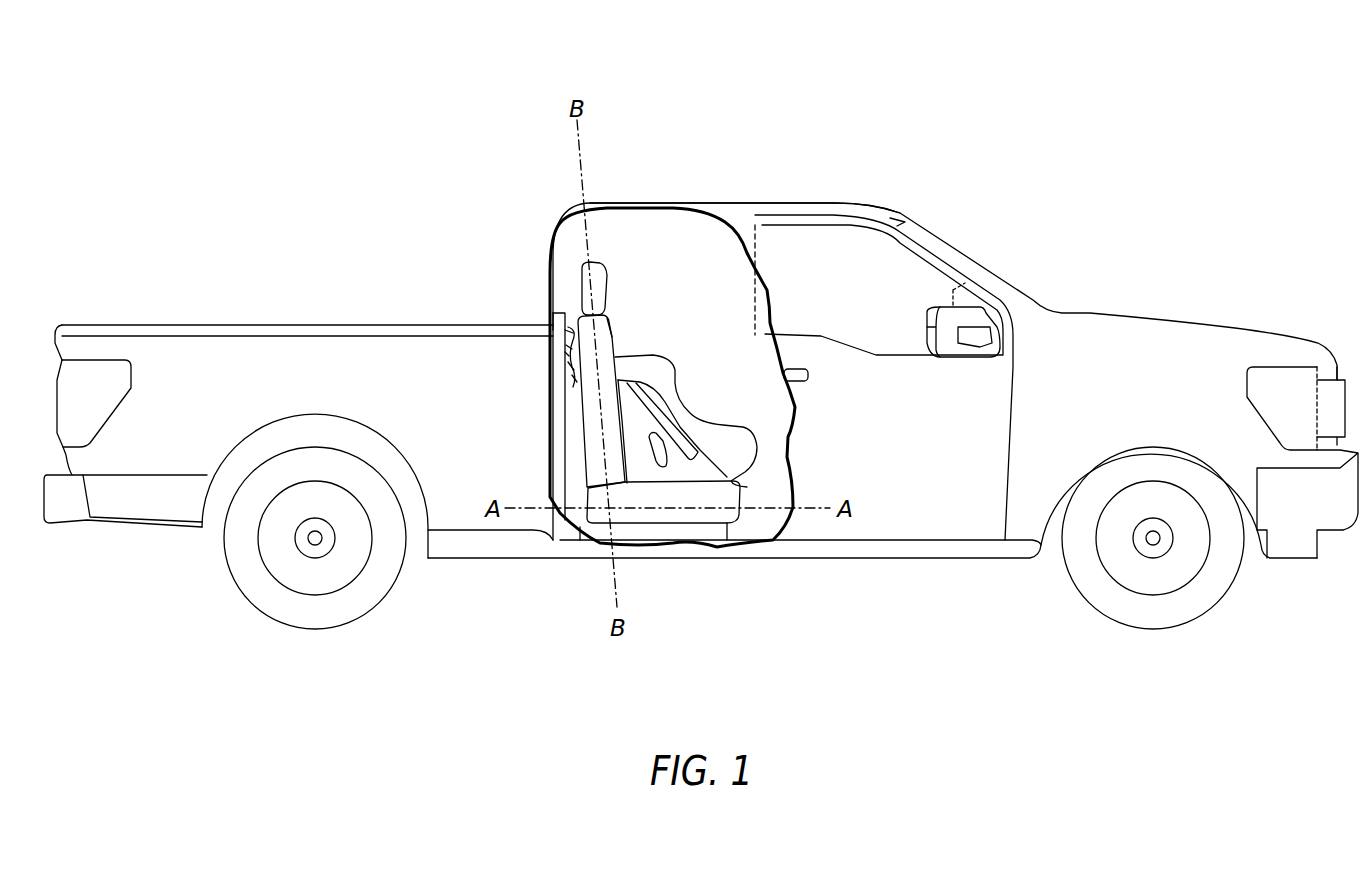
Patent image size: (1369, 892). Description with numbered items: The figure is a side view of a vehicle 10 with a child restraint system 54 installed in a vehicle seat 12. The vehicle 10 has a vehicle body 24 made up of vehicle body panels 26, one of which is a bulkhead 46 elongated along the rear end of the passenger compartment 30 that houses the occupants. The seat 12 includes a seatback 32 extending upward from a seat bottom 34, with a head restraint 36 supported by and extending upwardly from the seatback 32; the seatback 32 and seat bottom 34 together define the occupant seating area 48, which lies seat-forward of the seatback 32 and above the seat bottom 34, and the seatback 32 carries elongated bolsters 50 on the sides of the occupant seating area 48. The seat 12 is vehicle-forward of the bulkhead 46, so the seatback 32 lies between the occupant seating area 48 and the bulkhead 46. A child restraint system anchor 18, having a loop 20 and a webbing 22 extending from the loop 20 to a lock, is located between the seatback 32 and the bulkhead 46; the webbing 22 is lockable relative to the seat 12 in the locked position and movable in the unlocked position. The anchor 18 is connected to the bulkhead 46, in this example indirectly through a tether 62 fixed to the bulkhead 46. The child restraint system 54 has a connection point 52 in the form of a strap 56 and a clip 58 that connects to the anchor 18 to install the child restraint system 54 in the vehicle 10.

The vehicle 10 is at (1058, 150).
The vehicle seat 12 is at (711, 379).
The child restraint system anchor 18 is at (572, 306).
The loop 20 is at (572, 367).
The webbing 22 is at (575, 378).
The vehicle body 24 is at (840, 197).
The vehicle body panels 26 is at (558, 306).
The passenger compartment 30 is at (717, 263).
The seatback 32 is at (620, 327).
The seat bottom 34 is at (723, 493).
The head restraint 36 is at (590, 277).
The bulkhead 46 is at (577, 453).
The occupant seating area 48 is at (689, 395).
The bolsters 50 is at (622, 425).
The connection point 52 is at (602, 325).
The child restraint system 54 is at (678, 372).
The strap 56 is at (573, 333).
The clip 58 is at (570, 347).
The tether 62 is at (567, 352).